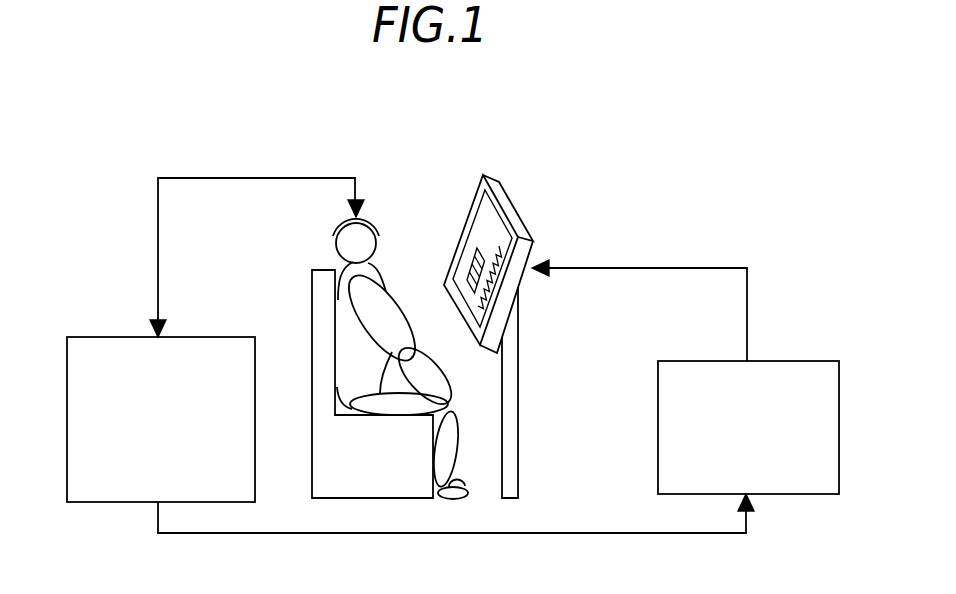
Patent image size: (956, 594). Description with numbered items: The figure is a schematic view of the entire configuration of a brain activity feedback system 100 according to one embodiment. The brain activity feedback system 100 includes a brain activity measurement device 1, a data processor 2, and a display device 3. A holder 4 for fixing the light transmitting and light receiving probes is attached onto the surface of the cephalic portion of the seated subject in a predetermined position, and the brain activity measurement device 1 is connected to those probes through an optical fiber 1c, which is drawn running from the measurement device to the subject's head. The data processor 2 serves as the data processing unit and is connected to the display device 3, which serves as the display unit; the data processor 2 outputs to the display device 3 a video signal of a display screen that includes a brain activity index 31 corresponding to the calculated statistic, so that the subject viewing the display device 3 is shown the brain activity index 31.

The brain activity feedback system 100 is at (589, 181).
The brain activity measurement device 1 is at (125, 336).
The optical fiber 1c is at (234, 178).
The data processor 2 is at (793, 361).
The display device 3 is at (526, 222).
The brain activity index 31 is at (483, 242).
The holder 4 is at (370, 221).